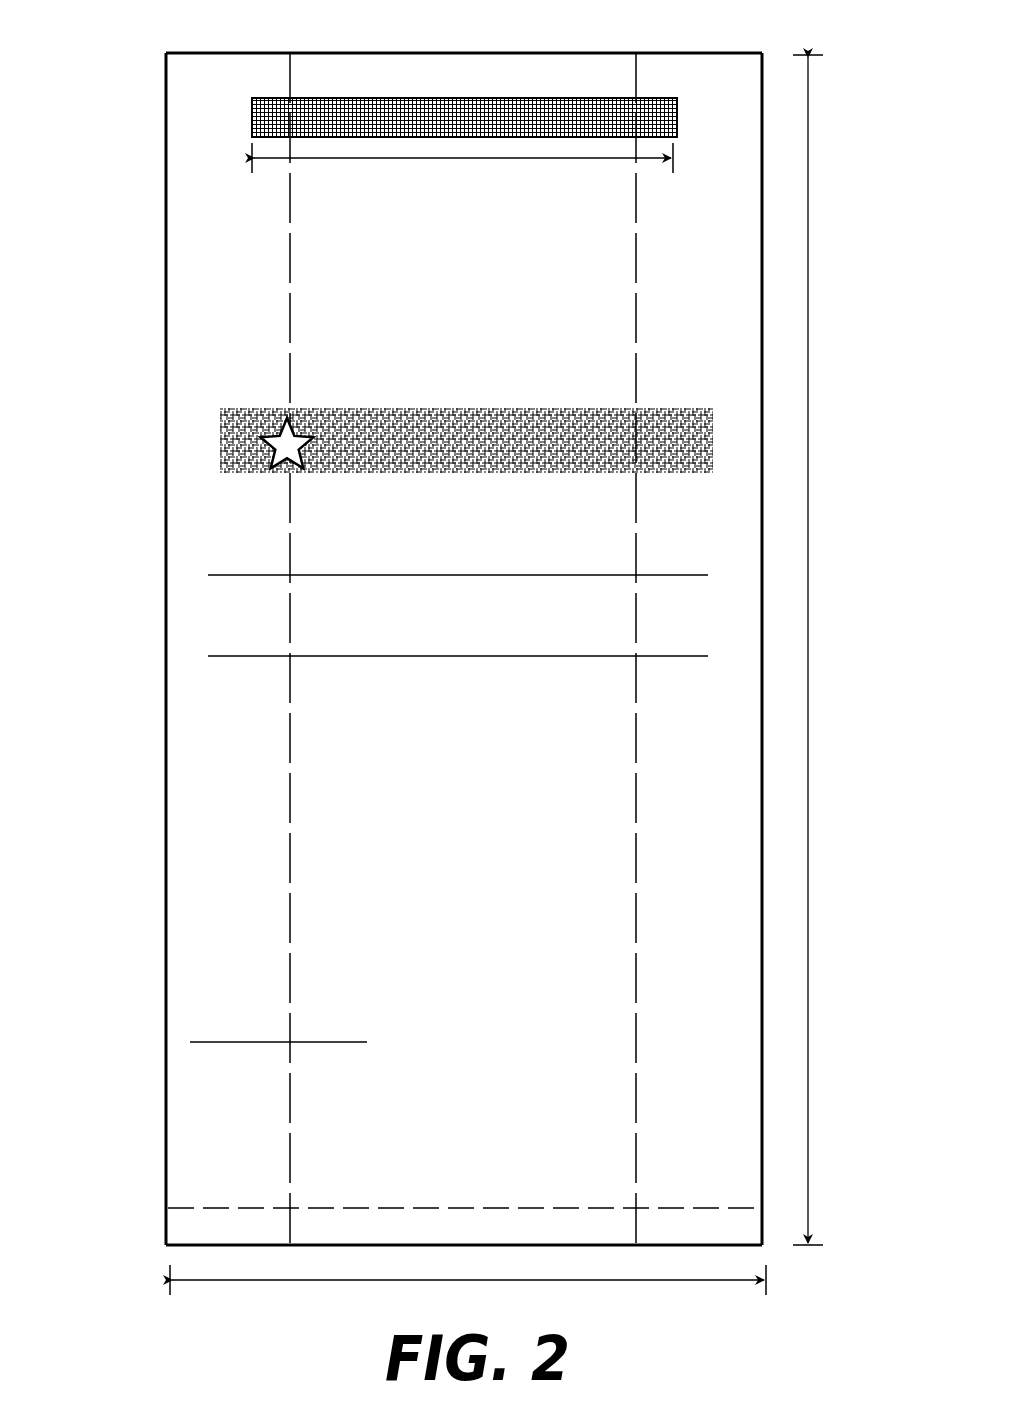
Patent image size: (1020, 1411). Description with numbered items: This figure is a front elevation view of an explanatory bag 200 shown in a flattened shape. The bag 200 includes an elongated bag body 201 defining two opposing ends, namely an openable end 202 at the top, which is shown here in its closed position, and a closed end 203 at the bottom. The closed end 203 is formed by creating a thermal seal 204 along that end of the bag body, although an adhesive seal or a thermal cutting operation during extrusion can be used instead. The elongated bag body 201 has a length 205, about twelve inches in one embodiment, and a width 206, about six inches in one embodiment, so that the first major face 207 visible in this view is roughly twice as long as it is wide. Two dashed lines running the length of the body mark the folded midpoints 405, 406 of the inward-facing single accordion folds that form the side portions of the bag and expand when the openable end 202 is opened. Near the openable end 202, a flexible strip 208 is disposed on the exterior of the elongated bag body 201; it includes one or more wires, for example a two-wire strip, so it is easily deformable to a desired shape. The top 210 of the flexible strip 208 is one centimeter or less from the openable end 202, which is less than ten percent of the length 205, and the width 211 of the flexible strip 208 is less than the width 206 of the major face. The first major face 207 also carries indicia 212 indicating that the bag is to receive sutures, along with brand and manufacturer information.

The bag 200 is at (103, 358).
The elongated bag body 201 is at (473, 811).
The openable end 202 is at (565, 38).
The closed end 203 is at (325, 1260).
The thermal seal 204 is at (462, 1205).
The length 205 is at (808, 607).
The width 206 is at (632, 1280).
The first major face 207 is at (198, 865).
The flexible strip 208 is at (255, 115).
The top of the flexible strip 210 is at (335, 100).
The width of the flexible strip 211 is at (538, 172).
The indicia 212 is at (562, 598).
The folded midpoint 405 is at (636, 990).
The folded midpoint 406 is at (290, 847).